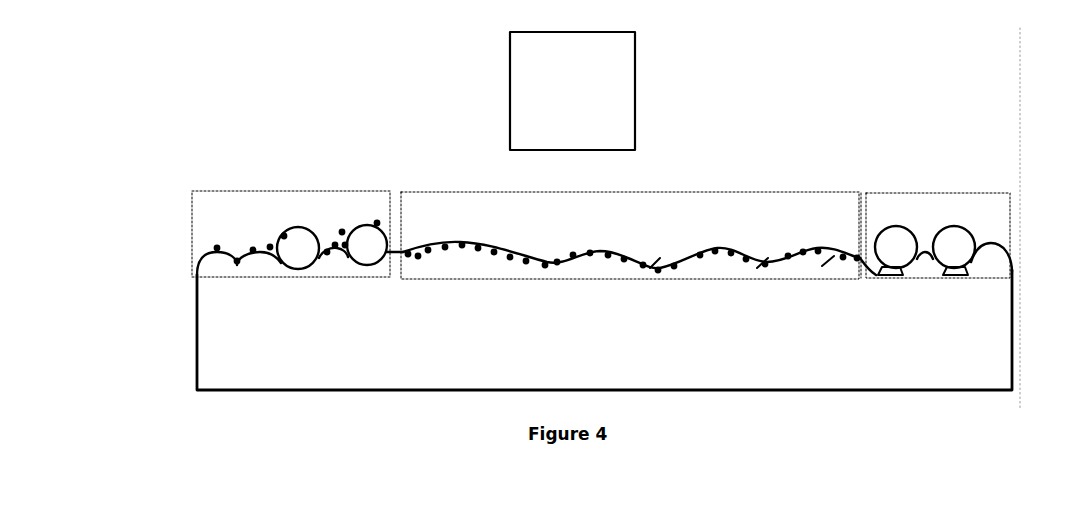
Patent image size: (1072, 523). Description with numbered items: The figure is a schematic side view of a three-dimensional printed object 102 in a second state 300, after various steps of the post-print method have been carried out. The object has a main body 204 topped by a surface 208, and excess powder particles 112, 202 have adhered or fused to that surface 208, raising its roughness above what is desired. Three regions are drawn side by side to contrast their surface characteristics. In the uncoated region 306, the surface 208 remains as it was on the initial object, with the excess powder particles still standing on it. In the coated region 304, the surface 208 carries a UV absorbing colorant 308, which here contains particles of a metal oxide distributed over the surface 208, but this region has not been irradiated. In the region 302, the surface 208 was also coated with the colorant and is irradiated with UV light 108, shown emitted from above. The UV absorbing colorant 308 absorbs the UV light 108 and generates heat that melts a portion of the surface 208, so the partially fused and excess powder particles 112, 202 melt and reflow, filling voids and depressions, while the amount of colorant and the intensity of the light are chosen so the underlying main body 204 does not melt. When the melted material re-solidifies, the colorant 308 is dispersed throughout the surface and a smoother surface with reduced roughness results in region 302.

The 3D printed object 102 is at (282, 63).
The UV light 108 is at (510, 62).
The excess powder particles 112 is at (711, 247).
The excess powder particles 202 is at (296, 242).
The main body 204 is at (226, 386).
The surface 208 is at (336, 276).
The second state 300 is at (206, 108).
The region 302 is at (486, 190).
The region 304 is at (287, 192).
The region 306 is at (985, 192).
The UV absorbing colorant 308 is at (422, 247).